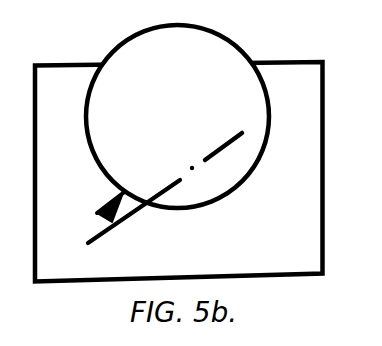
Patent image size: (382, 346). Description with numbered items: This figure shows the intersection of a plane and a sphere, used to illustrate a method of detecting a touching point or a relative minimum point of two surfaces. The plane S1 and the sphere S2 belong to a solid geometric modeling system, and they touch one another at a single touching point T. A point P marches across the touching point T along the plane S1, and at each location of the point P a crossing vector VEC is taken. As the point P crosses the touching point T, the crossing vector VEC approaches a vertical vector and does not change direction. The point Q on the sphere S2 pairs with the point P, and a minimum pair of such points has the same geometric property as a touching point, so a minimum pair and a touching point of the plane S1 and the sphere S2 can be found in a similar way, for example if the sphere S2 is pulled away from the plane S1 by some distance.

The plane S1 is at (201, 172).
The sphere S2 is at (177, 116).
The point P is at (134, 217).
The point Q is at (132, 175).
The touching point T is at (215, 165).
The crossing vector VEC is at (82, 215).